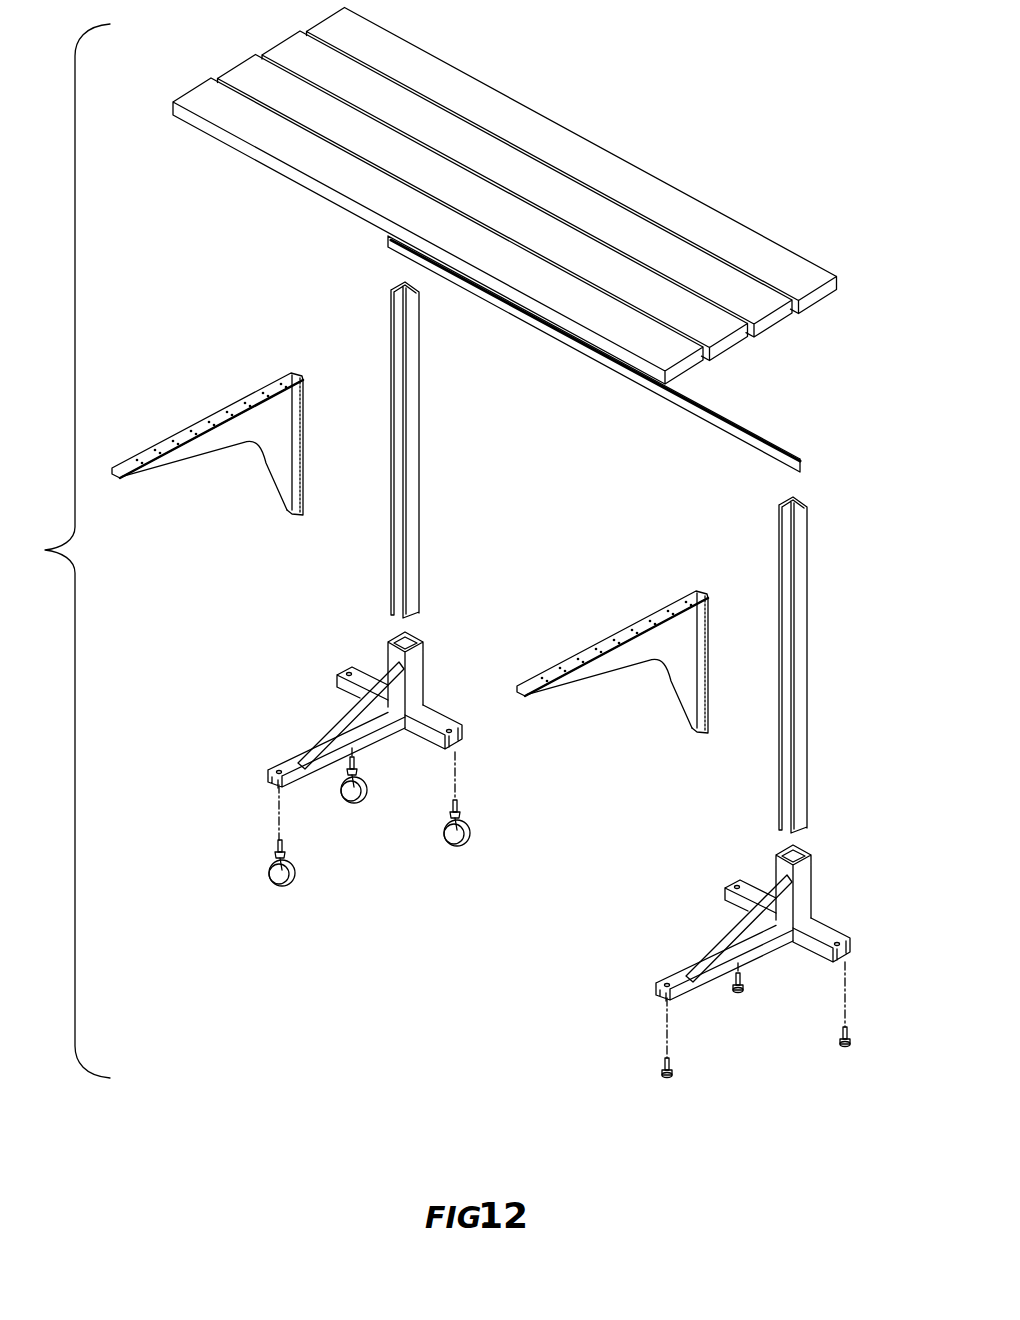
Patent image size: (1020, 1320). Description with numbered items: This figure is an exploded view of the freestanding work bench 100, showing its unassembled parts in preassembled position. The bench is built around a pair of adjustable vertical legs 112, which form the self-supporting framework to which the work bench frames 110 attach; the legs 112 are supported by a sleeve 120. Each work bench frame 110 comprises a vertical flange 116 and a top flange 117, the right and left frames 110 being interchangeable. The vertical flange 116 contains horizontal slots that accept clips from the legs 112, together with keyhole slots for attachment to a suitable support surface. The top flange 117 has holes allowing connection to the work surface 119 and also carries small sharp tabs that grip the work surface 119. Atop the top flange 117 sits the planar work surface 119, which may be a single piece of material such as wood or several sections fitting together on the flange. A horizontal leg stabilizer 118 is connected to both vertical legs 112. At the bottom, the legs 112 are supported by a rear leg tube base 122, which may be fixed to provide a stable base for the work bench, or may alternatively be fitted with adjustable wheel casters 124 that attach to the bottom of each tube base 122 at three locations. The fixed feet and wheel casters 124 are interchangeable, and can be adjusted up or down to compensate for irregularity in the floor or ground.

The freestanding work bench 100 is at (634, 111).
The work bench frame 110 is at (175, 412).
The adjustable vertical leg 112 is at (420, 379).
The vertical flange 116 is at (305, 430).
The top flange 117 is at (247, 387).
The horizontal leg stabilizer 118 is at (177, 459).
The work surface 119 is at (793, 242).
The sleeve 120 is at (800, 443).
The leg tube base 122 is at (818, 874).
The wheel caster 124 is at (268, 866).